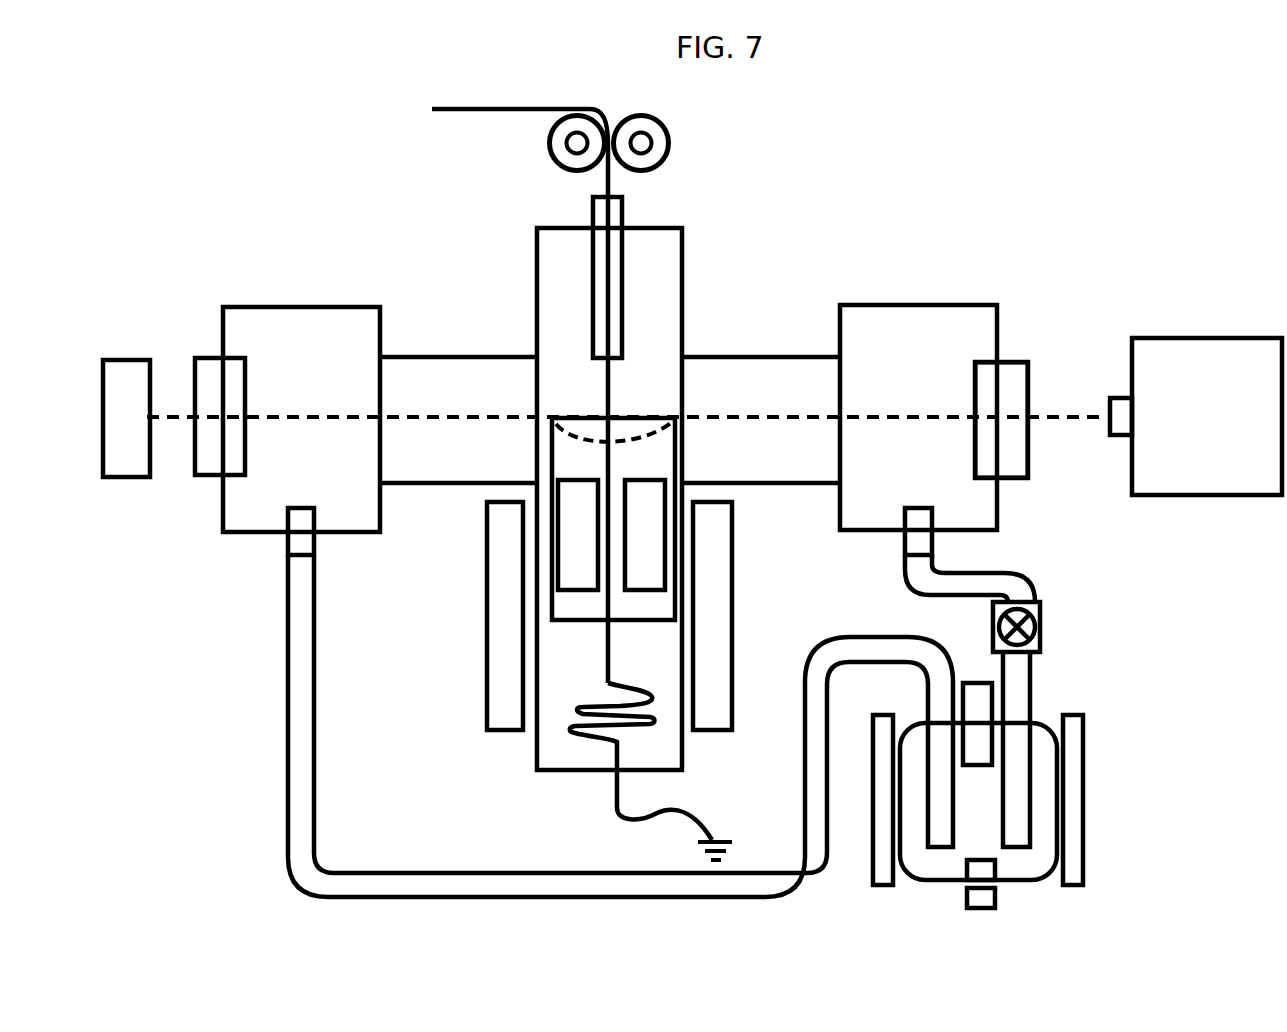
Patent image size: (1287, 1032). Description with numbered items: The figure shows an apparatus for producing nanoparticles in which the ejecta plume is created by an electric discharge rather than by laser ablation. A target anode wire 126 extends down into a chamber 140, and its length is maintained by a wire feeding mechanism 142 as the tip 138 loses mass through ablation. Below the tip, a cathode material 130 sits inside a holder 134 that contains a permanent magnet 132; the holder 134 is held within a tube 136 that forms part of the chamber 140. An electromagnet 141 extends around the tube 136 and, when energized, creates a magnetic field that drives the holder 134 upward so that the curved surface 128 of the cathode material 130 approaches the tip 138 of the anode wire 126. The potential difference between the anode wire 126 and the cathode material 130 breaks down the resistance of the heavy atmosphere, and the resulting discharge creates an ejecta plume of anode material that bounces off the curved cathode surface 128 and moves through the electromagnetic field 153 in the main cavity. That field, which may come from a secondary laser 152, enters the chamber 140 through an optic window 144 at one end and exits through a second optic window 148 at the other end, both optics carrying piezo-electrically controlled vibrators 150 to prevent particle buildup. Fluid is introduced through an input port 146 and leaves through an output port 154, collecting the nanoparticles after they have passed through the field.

The target anode wire 126 is at (610, 276).
The cathode surface 128 is at (677, 432).
The cathode material 130 is at (640, 572).
The permanent magnet 132 is at (667, 437).
The holder 134 is at (550, 460).
The tube 136 is at (683, 747).
The tip of the target anode wire 138 is at (588, 436).
The chamber 140 is at (463, 384).
The electromagnet 141 is at (510, 686).
The wire feeding mechanism 142 is at (652, 135).
The optic window 144 is at (1017, 375).
The input port 146 is at (920, 537).
The second optic window 148 is at (207, 460).
The piezo-electrically controlled vibrators 150 is at (233, 375).
The secondary laser 152 is at (1185, 460).
The electromagnetic field 153 is at (1053, 413).
The output port 154 is at (300, 544).